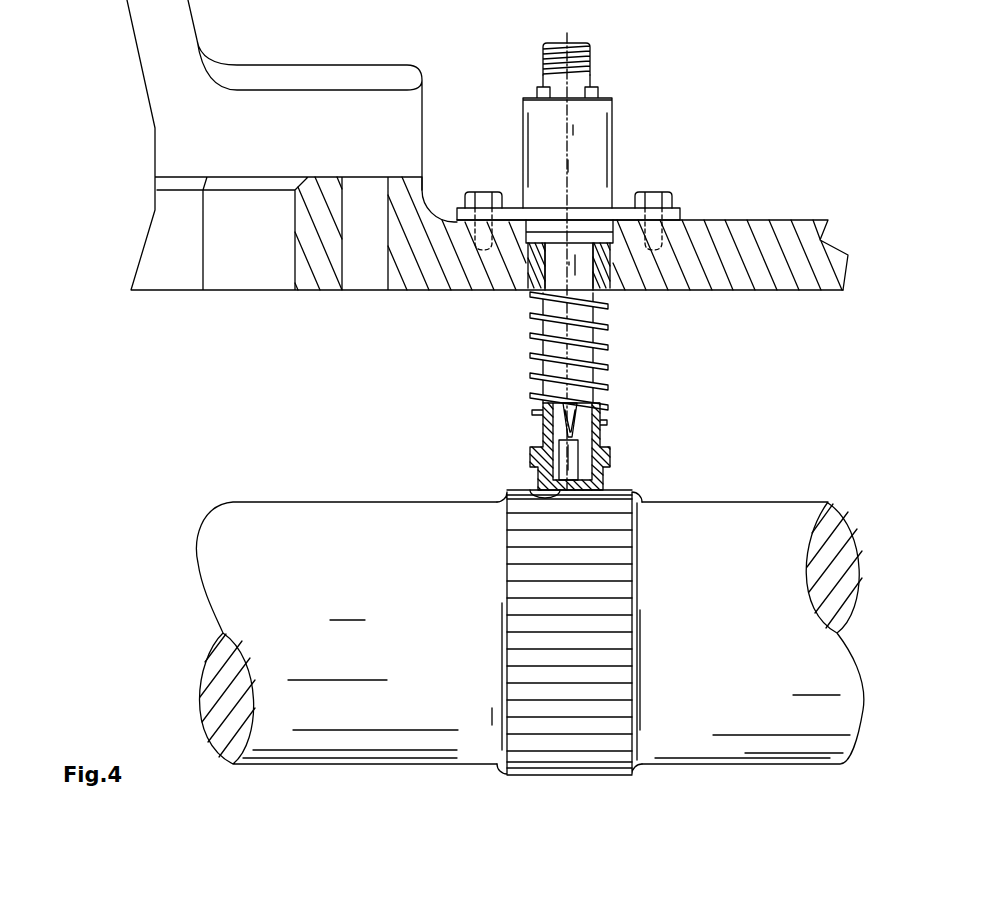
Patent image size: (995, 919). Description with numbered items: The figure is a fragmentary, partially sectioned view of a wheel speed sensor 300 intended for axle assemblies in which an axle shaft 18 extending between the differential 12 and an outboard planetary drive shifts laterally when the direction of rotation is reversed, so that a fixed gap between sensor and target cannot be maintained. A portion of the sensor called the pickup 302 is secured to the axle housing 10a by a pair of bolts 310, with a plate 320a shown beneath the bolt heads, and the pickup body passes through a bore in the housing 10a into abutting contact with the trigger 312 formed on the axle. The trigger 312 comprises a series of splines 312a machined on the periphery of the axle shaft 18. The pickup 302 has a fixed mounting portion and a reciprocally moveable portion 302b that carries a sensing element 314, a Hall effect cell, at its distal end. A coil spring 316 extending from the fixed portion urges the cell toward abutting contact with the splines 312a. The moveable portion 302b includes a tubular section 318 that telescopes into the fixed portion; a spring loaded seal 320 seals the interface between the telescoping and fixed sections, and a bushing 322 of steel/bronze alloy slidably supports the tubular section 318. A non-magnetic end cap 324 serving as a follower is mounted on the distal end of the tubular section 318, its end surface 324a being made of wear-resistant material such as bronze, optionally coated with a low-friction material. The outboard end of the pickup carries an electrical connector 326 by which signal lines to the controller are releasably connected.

The differential 12 is at (96, 168).
The axle housing 10a is at (400, 125).
The wheel speed sensor 300 is at (805, 190).
The electrical connector 326 is at (587, 57).
The pickup 302 is at (617, 97).
The mounting plate 320a is at (620, 177).
The bolts 310 is at (482, 197).
The spring loaded seal 320 is at (532, 290).
The bushing 322 is at (532, 257).
The reciprocally moveable portion 302b is at (605, 358).
The tubular section 318 is at (555, 365).
The coil spring 316 is at (605, 325).
The end cap 324 is at (608, 453).
The end surface 324a is at (533, 490).
The sensing element 314 is at (605, 440).
The axle shaft 18 is at (349, 578).
The trigger 312 is at (638, 552).
The splines 312a is at (605, 615).